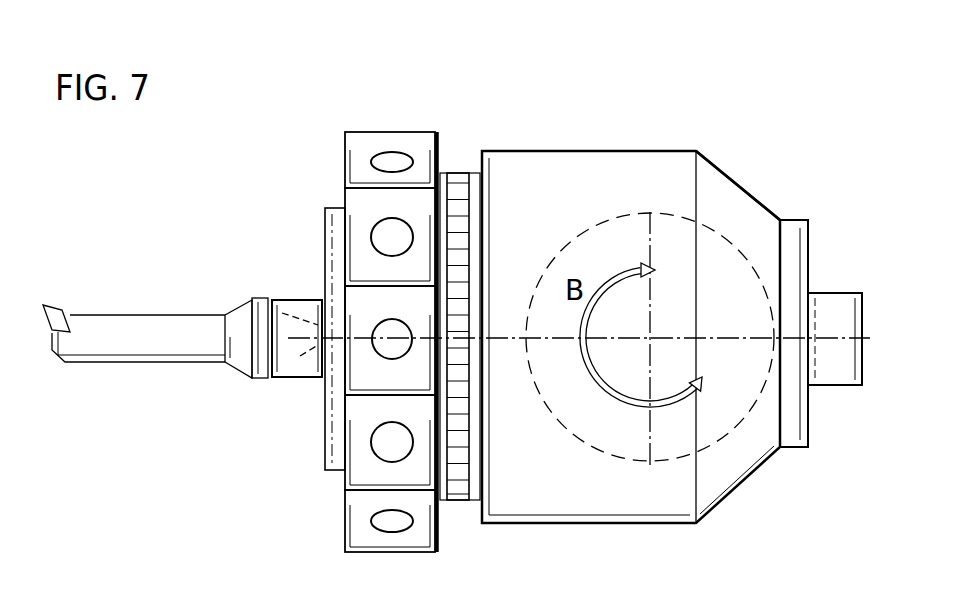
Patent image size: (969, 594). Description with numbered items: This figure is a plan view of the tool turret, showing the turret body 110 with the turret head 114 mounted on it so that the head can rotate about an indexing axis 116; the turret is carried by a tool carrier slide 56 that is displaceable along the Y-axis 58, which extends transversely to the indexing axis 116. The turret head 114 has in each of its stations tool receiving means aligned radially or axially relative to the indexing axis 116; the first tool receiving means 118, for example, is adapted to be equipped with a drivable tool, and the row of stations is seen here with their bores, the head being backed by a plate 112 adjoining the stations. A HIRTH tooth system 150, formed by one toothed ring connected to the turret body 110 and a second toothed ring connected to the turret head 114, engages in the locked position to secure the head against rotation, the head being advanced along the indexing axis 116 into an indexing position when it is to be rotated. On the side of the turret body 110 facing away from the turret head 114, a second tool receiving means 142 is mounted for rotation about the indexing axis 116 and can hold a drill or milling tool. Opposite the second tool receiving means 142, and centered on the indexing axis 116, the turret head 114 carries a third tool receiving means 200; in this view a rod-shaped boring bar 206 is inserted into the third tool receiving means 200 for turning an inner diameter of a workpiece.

The tool carrier slide 56 is at (717, 218).
The Y-axis 58 is at (652, 335).
The turret body 110 is at (635, 162).
The tool head assembly back plate 112 is at (323, 146).
The turret head 114 is at (428, 150).
The indexing axis 116 is at (508, 320).
The first tool receiving means 118 is at (390, 162).
The second tool receiving means 142 is at (828, 330).
The HIRTH tooth system 150 is at (462, 170).
The third tool receiving means 200 is at (306, 348).
The boring bar 206 is at (104, 328).